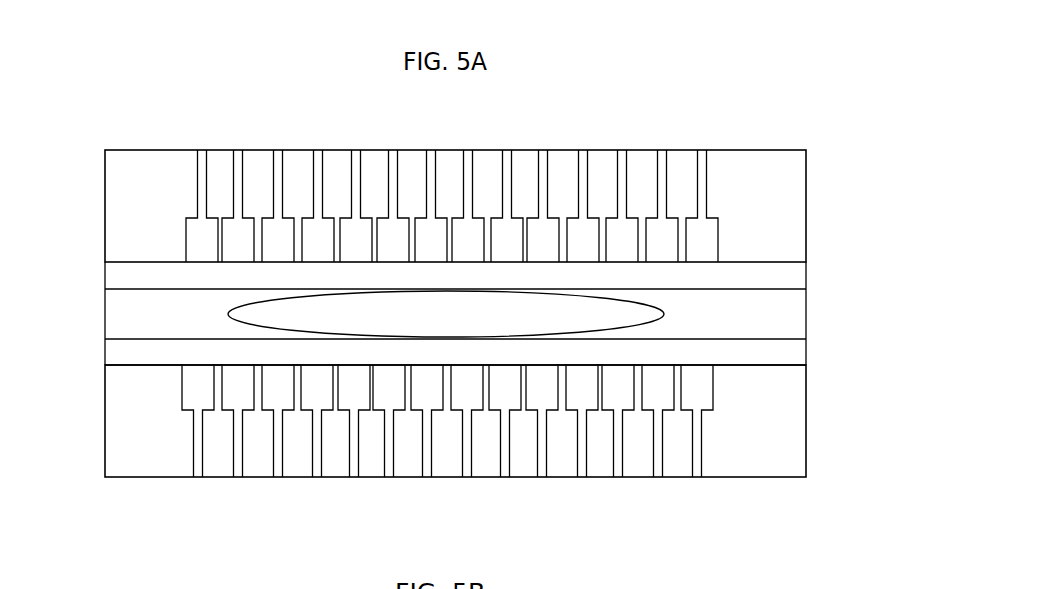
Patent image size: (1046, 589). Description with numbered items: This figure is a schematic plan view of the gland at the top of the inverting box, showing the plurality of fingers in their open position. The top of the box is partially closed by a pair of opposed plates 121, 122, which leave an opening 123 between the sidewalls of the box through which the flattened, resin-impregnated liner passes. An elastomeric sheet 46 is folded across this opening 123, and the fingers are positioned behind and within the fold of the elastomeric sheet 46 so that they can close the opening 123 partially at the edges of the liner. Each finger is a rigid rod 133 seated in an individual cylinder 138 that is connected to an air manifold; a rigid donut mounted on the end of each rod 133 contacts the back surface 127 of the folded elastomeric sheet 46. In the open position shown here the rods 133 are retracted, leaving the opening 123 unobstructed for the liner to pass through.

In FIG. 5A, the opposed plate 121 is at (753, 160).
In FIG. 5A, the opposed plate 122 is at (770, 443).
In FIG. 5A, the opening 123 is at (128, 319).
In FIG. 5A, the rigid rod 133 is at (463, 387).
In FIG. 5A, the elastomeric sheet 46 is at (638, 349).
In FIG. 5A, the back surface of folded elastomeric sheet 127 is at (749, 345).
In FIG. 5B, the cylinder 138 is at (565, 587).